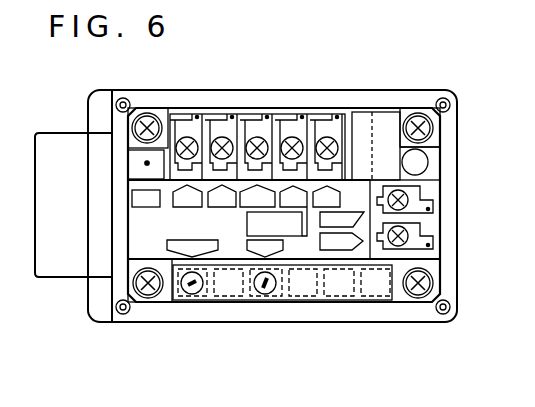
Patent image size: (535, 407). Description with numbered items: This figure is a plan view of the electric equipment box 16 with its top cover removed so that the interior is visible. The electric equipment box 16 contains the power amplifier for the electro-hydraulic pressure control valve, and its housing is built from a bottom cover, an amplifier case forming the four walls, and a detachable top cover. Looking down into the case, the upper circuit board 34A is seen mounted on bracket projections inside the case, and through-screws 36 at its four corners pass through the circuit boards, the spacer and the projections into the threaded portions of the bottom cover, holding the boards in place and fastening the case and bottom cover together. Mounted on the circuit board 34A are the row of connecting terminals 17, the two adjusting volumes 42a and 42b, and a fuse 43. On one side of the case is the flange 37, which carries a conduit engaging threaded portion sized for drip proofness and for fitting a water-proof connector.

The electric equipment box 16 is at (457, 197).
The connecting terminals 17 is at (198, 147).
The circuit board 34A is at (233, 240).
The through-screws 36 is at (148, 113).
The flange 37 is at (49, 270).
The adjusting volume 42a is at (193, 294).
The adjusting volume 42b is at (268, 295).
The fuse 43 is at (378, 117).